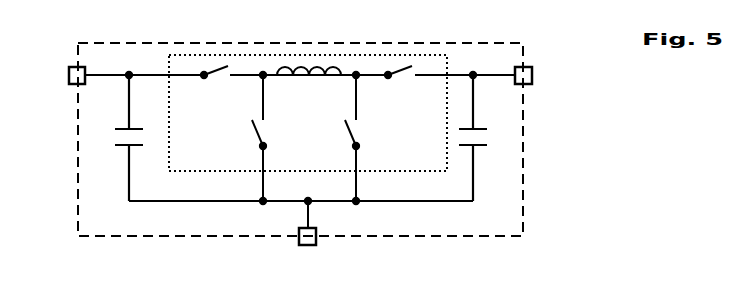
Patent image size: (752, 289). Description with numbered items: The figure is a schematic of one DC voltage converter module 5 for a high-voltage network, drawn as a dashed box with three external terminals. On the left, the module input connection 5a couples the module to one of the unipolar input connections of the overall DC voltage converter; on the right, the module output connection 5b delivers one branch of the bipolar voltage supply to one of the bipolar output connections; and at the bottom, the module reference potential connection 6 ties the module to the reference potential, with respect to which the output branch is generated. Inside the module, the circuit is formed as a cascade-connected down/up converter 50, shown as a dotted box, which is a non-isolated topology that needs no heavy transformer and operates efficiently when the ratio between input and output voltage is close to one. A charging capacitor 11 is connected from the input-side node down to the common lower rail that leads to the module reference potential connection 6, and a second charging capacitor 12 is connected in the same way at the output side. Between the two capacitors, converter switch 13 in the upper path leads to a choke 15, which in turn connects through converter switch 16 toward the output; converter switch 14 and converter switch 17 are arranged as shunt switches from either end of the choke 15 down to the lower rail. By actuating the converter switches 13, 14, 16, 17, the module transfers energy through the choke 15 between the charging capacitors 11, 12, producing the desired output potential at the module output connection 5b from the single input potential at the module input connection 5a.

The DC voltage converter module 5 is at (524, 185).
The module input connection 5a is at (68, 80).
The module output connection 5b is at (533, 75).
The module reference potential connection 6 is at (317, 240).
The charging capacitor 11 is at (137, 128).
The charging capacitor 12 is at (482, 128).
The converter switch 13 is at (217, 80).
The converter switch 14 is at (267, 133).
The choke 15 is at (303, 80).
The converter switch 16 is at (405, 80).
The converter switch 17 is at (360, 133).
The cascade-connected down/up converter 50 is at (420, 167).